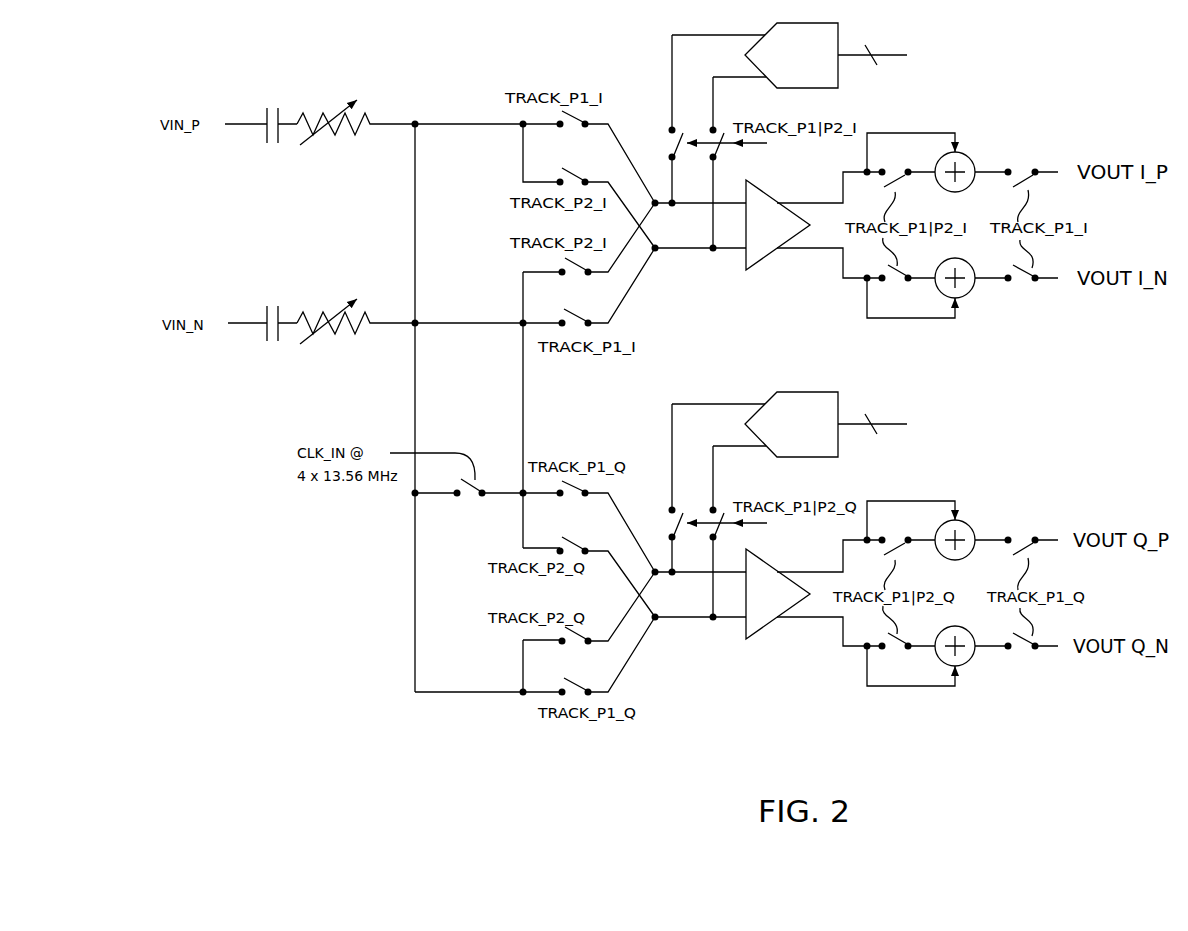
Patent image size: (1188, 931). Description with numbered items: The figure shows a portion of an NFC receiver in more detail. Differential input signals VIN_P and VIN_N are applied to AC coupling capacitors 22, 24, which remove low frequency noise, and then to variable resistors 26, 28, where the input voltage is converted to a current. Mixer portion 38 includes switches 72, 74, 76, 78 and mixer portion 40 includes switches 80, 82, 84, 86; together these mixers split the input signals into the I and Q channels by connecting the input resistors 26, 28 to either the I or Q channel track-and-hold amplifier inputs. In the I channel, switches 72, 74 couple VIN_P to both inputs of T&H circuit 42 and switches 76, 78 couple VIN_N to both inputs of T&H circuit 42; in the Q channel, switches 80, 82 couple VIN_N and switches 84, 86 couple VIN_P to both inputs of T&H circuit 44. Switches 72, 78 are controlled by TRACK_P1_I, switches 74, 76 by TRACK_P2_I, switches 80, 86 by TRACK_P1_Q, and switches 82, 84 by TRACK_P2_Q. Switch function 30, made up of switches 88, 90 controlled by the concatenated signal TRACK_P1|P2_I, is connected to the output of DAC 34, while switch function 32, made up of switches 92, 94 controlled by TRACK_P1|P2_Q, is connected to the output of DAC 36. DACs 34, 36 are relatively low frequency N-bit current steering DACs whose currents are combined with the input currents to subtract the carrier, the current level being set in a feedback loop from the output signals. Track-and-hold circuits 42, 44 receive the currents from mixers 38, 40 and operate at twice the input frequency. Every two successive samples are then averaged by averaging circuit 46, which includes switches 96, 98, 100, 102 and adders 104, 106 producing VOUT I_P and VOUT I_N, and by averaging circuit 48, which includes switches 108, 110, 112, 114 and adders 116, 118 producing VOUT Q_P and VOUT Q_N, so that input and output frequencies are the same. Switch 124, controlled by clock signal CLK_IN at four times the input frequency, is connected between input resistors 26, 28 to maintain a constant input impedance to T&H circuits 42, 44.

The AC coupling capacitor 22 is at (272, 104).
The AC coupling capacitor 24 is at (272, 343).
The variable resistor 26 is at (307, 104).
The variable resistor 28 is at (330, 341).
The switch function 30 is at (660, 91).
The switch function 32 is at (658, 498).
The DAC 34 is at (787, 22).
The DAC 36 is at (795, 391).
The mixer portion 38 is at (568, 57).
The mixer portion 40 is at (663, 682).
The T&H circuit 42 is at (756, 263).
The T&H circuit 44 is at (758, 634).
The averaging circuit 46 is at (1020, 340).
The averaging circuit 48 is at (1025, 465).
The switch 72 is at (573, 132).
The switch 74 is at (572, 170).
The switch 76 is at (574, 278).
The switch 78 is at (572, 312).
The switch 80 is at (568, 497).
The switch 82 is at (570, 538).
The switch 84 is at (574, 645).
The switch 86 is at (572, 682).
The switch 88 is at (668, 143).
The switch 90 is at (722, 152).
The switch 92 is at (704, 488).
The switch 94 is at (727, 531).
The switch 96 is at (892, 183).
The switch 98 is at (1018, 170).
The switch 100 is at (893, 284).
The switch 102 is at (1030, 286).
The adder 104 is at (968, 160).
The adder 106 is at (970, 293).
The switch 108 is at (892, 551).
The switch 110 is at (1020, 538).
The switch 112 is at (893, 654).
The switch 114 is at (1030, 654).
The adder 116 is at (969, 527).
The adder 118 is at (970, 661).
The switch 124 is at (470, 500).